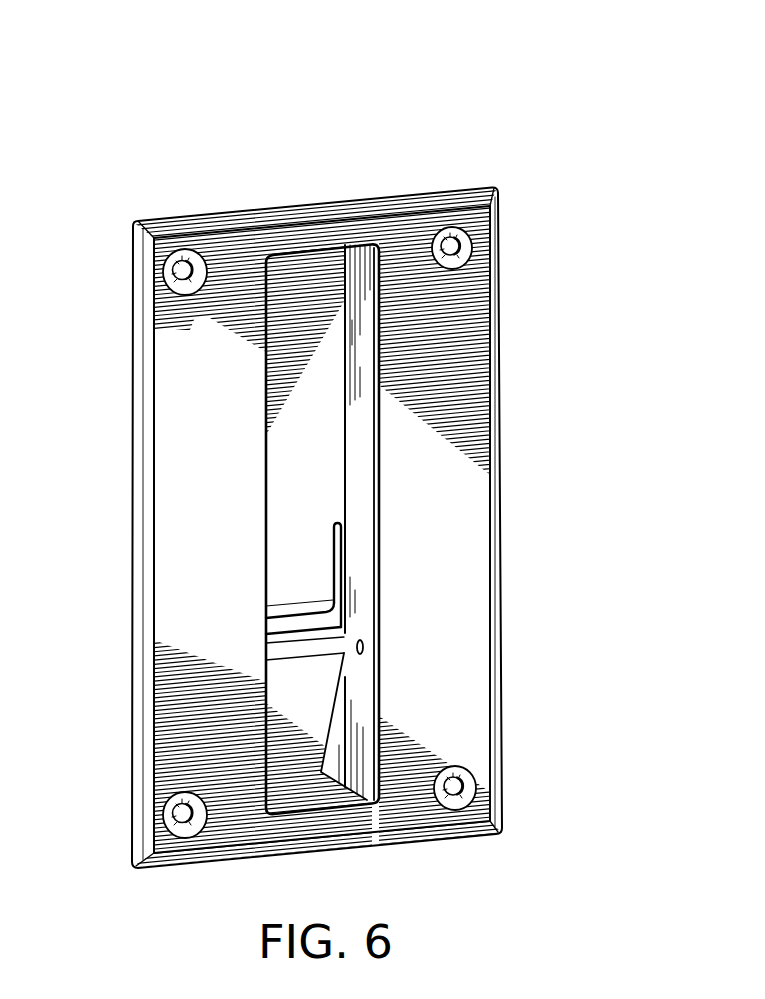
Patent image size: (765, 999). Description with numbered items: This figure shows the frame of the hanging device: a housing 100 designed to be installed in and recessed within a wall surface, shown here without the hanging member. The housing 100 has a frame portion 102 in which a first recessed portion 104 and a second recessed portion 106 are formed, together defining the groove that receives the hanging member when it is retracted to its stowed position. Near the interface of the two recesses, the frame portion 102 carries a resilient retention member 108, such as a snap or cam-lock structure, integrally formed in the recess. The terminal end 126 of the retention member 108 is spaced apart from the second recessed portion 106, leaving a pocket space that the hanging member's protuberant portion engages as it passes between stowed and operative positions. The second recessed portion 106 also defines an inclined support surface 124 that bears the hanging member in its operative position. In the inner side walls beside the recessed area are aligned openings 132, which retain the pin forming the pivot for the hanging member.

The housing 100 is at (509, 156).
The frame portion 102 is at (472, 313).
The first recessed portion 104 is at (292, 440).
The second recessed portion 106 is at (342, 750).
The retention member 108 is at (313, 560).
The inclined support surface 124 is at (280, 724).
The terminal end 126 is at (335, 603).
The openings 132 is at (366, 647).